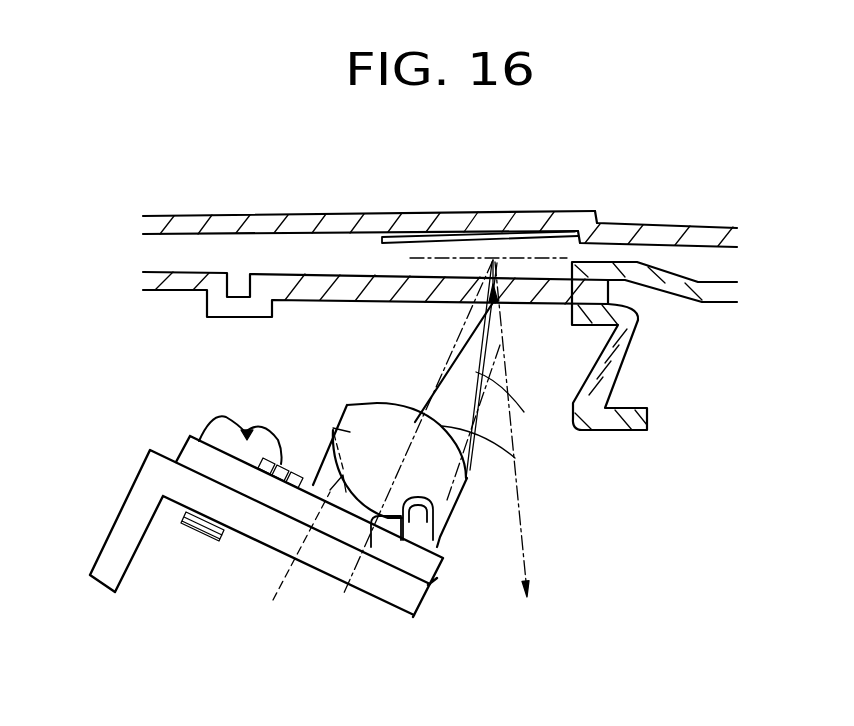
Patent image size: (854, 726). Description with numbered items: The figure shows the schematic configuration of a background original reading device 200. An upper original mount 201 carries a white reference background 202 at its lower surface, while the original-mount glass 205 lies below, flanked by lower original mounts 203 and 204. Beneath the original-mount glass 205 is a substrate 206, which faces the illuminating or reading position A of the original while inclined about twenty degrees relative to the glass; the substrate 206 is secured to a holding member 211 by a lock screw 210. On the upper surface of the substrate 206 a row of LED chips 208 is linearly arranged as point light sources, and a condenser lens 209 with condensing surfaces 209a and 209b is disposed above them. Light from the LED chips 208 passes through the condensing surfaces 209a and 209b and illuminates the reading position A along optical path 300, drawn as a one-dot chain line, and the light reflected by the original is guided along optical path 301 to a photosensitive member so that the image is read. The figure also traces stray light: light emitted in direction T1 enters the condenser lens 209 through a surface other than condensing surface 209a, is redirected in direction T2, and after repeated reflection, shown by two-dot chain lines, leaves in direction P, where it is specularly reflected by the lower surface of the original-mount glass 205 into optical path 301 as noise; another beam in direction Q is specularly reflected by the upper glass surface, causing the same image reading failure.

The original reading device 200 is at (640, 519).
The upper original mount 201 is at (648, 224).
The white reference background 202 is at (572, 197).
The lower original mount 203 is at (162, 274).
The lower original mount 204 is at (707, 303).
The original-mount glass 205 is at (325, 280).
The substrate 206 is at (435, 577).
The LED chips 208 is at (390, 515).
The condenser lens 209 is at (394, 509).
The condensing surface 209a is at (440, 530).
The condensing surface 209b is at (413, 403).
The lock screw 210 is at (213, 432).
The holding member 211 is at (108, 537).
The optical path 300 is at (443, 372).
The optical path 301 is at (523, 541).
The reading position A is at (493, 258).
The direction P is at (524, 412).
The direction Q is at (515, 458).
The direction T1 is at (318, 614).
The direction T2 is at (289, 561).